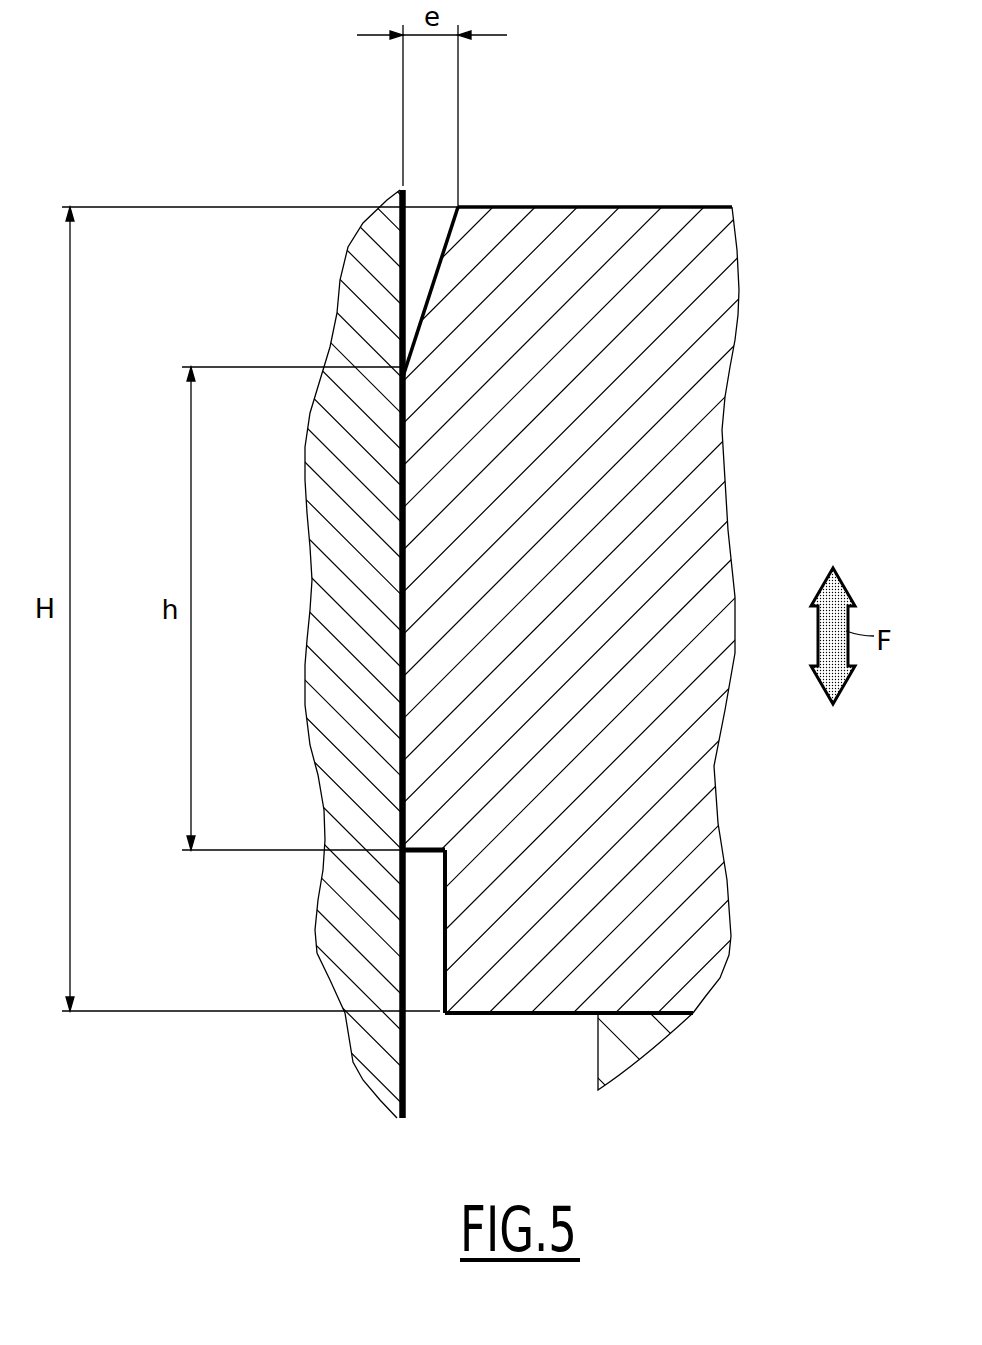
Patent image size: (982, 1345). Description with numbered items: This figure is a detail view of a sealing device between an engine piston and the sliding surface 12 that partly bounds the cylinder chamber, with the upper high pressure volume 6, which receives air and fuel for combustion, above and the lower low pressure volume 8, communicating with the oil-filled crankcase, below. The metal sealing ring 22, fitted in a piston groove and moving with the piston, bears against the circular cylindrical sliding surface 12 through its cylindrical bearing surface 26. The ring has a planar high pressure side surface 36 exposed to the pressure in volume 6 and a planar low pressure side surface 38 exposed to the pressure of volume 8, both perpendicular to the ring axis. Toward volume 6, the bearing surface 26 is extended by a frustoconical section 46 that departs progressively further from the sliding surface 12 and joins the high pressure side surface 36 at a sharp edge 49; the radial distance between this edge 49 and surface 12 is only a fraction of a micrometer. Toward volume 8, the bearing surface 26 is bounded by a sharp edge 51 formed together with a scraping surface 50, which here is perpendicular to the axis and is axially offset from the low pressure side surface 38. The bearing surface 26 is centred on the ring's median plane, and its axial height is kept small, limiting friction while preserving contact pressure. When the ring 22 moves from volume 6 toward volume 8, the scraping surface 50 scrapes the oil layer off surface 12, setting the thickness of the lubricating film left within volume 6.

The upper high pressure volume 6 is at (605, 103).
The lower low pressure volume 8 is at (643, 1129).
The sliding surface 12 is at (403, 252).
The metal sealing ring 22 is at (710, 267).
The cylindrical bearing surface 26 is at (400, 605).
The high pressure side surface 36 is at (596, 206).
The low pressure side surface 38 is at (500, 1015).
The frustoconical section 46 is at (445, 243).
The sharp edge 49 is at (458, 205).
The scraping surface 50 is at (427, 855).
The sharp edge on the low pressure side 51 is at (367, 849).